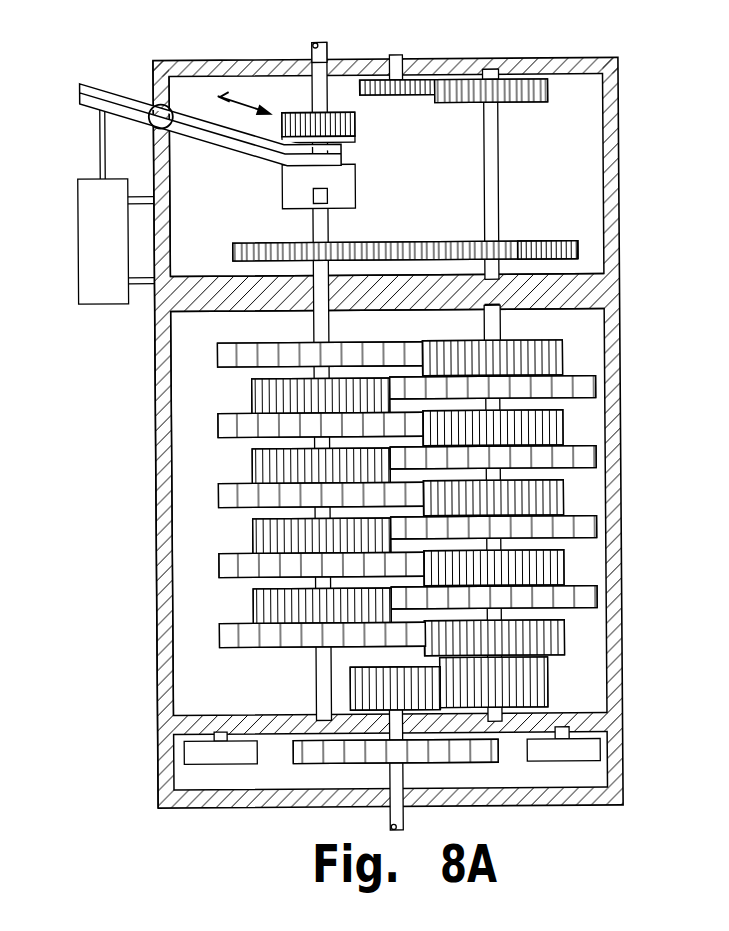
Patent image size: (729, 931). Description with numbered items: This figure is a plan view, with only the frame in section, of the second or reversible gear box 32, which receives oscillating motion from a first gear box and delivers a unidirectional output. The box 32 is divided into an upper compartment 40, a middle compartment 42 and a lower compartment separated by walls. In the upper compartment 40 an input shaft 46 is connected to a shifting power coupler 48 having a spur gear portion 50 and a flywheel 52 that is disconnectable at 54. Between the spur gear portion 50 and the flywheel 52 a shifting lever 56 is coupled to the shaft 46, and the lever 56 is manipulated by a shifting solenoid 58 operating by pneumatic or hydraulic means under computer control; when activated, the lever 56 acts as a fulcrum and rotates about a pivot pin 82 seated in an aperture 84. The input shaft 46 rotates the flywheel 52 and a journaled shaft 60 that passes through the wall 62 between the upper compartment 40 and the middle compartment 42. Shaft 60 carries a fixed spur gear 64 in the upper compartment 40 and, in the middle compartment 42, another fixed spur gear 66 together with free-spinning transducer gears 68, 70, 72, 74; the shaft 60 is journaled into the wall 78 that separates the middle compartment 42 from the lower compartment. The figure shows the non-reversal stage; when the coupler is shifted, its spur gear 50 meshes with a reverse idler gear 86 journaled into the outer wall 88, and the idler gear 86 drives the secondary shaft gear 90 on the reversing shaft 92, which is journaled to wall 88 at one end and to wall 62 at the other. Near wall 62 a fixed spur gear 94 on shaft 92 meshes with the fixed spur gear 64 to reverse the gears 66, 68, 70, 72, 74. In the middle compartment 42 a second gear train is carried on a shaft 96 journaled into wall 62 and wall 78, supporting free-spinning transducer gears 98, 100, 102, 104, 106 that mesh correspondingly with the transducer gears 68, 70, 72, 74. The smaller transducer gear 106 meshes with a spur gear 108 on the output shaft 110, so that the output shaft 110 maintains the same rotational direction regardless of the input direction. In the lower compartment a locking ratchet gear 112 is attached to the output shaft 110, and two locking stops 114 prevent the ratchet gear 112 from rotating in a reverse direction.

The reversible gear box 32 is at (640, 90).
The upper compartment 40 is at (546, 162).
The middle compartment 42 is at (194, 695).
The input shaft 46 is at (313, 45).
The shifting power coupler 48 is at (222, 95).
The spur gear portion 50 is at (356, 126).
The flywheel 52 is at (358, 178).
The disconnect point 54 is at (284, 203).
The shifting lever 56 is at (178, 132).
The shifting solenoid 58 is at (91, 263).
The journaled shaft 60 is at (330, 240).
The wall 62 is at (605, 300).
The fixed spur gear 64 is at (234, 251).
The fixed spur gear 66 is at (222, 353).
The transducer gear 68 is at (230, 412).
The transducer gear 70 is at (246, 482).
The transducer gear 72 is at (240, 552).
The transducer gear 74 is at (232, 621).
The wall 78 is at (588, 722).
The pivot pin 82 is at (155, 106).
The aperture 84 is at (151, 121).
The reverse idler gear 86 is at (363, 88).
The outer wall 88 is at (439, 66).
The secondary shaft gear 90 is at (525, 90).
The reversing shaft 92 is at (486, 188).
The fixed spur gear 94 is at (519, 248).
The shaft 96 is at (485, 323).
The transducer gear 98 is at (558, 357).
The transducer gear 100 is at (570, 447).
The transducer gear 102 is at (568, 520).
The transducer gear 104 is at (568, 592).
The smaller transducer gear 106 is at (528, 686).
The spur gear 108 is at (416, 668).
The output shaft 110 is at (404, 775).
The locking ratchet gear 112 is at (374, 756).
The locking stops 114 is at (192, 752).